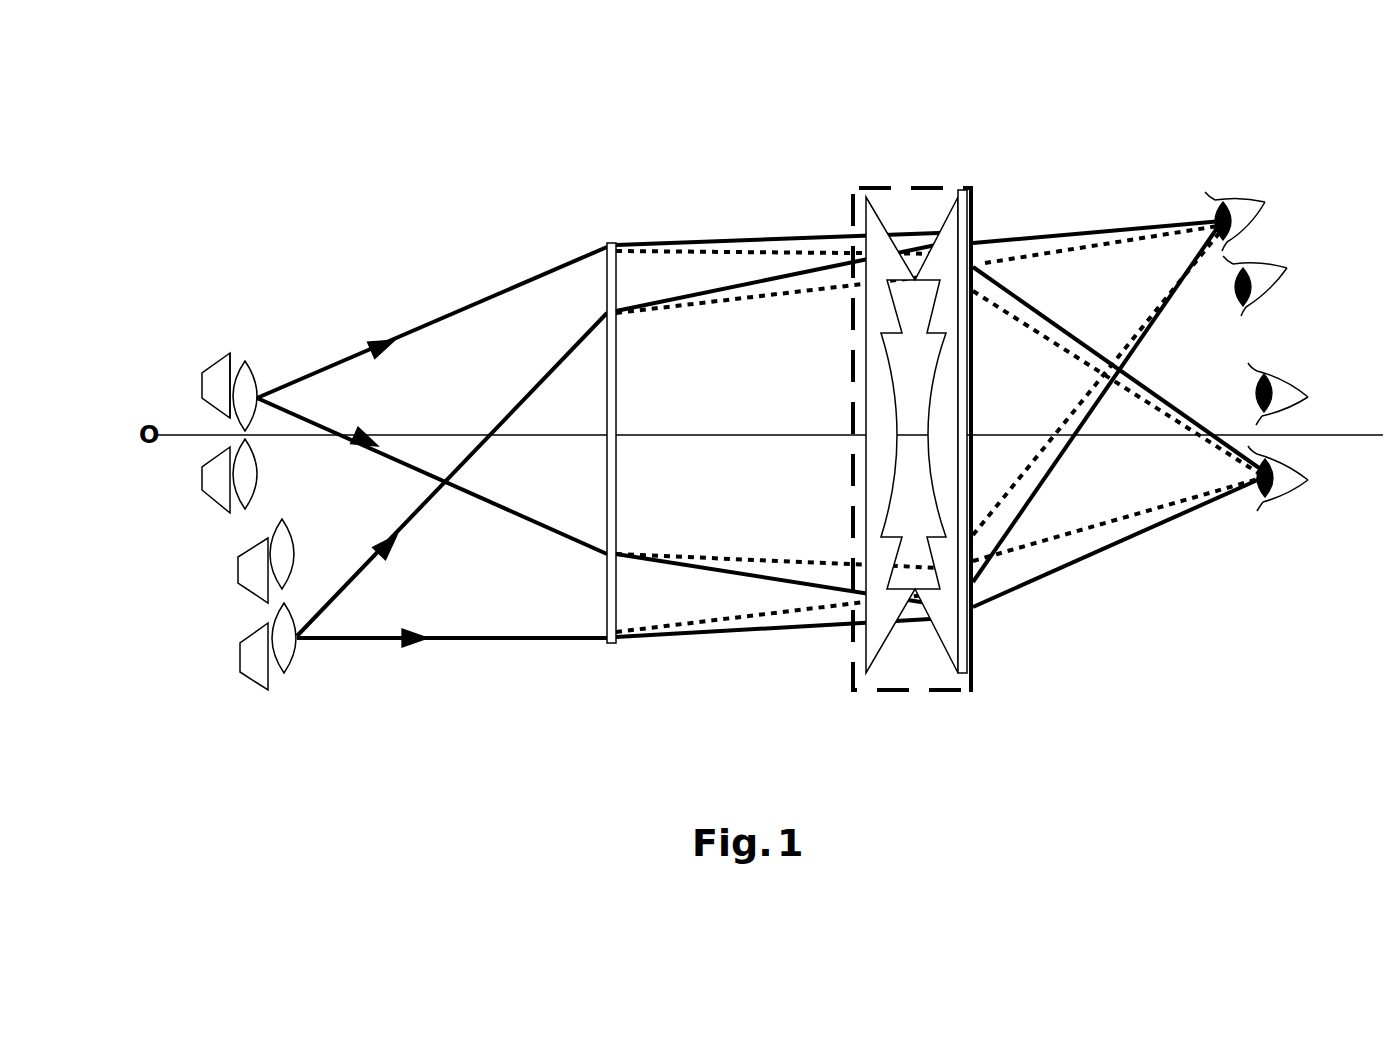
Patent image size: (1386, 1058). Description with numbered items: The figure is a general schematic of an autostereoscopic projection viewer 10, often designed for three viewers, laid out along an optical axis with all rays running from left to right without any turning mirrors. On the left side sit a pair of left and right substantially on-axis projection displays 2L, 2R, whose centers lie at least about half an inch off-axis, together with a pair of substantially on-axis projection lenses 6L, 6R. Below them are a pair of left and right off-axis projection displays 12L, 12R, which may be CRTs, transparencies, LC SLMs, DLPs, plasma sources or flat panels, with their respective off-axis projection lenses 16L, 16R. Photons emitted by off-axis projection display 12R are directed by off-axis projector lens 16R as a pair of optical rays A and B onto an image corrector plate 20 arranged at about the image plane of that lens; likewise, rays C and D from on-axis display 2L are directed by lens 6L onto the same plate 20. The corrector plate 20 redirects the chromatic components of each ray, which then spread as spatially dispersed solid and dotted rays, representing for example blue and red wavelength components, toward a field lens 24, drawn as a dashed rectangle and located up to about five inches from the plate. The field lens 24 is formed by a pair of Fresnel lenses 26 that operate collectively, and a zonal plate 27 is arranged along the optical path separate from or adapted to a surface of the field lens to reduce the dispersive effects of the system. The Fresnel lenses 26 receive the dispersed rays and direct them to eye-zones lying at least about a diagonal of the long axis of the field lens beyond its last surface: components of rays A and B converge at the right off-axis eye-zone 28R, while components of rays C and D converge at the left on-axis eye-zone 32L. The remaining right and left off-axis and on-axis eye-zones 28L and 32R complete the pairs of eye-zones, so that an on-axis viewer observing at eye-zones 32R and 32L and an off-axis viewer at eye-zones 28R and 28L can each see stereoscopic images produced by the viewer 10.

The autostereoscopic projection viewer 10 is at (390, 135).
The left substantially on-axis projection display 2L is at (203, 394).
The right substantially on-axis projection display 2R is at (203, 490).
The left substantially on-axis projection lens 6L is at (244, 360).
The right substantially on-axis projection lens 6R is at (246, 511).
The left off-axis projection display 12L is at (240, 586).
The right off-axis projection display 12R is at (258, 678).
The left off-axis projection lens 16L is at (287, 523).
The right off-axis projection lens 16R is at (287, 674).
The image corrector plate 20 is at (612, 243).
The field lens 24 is at (923, 188).
The pair of Fresnel lenses 26 is at (883, 655).
The zonal plate 27 is at (968, 657).
The right off-axis eye-zone 28R is at (1243, 202).
The left off-axis eye-zone 28L is at (1260, 270).
The right substantially on-axis eye-zone 32R is at (1285, 386).
The left substantially on-axis eye-zone 32L is at (1285, 488).
The optical ray A is at (490, 645).
The optical ray B is at (430, 502).
The optical ray C is at (326, 426).
The optical ray D is at (466, 303).